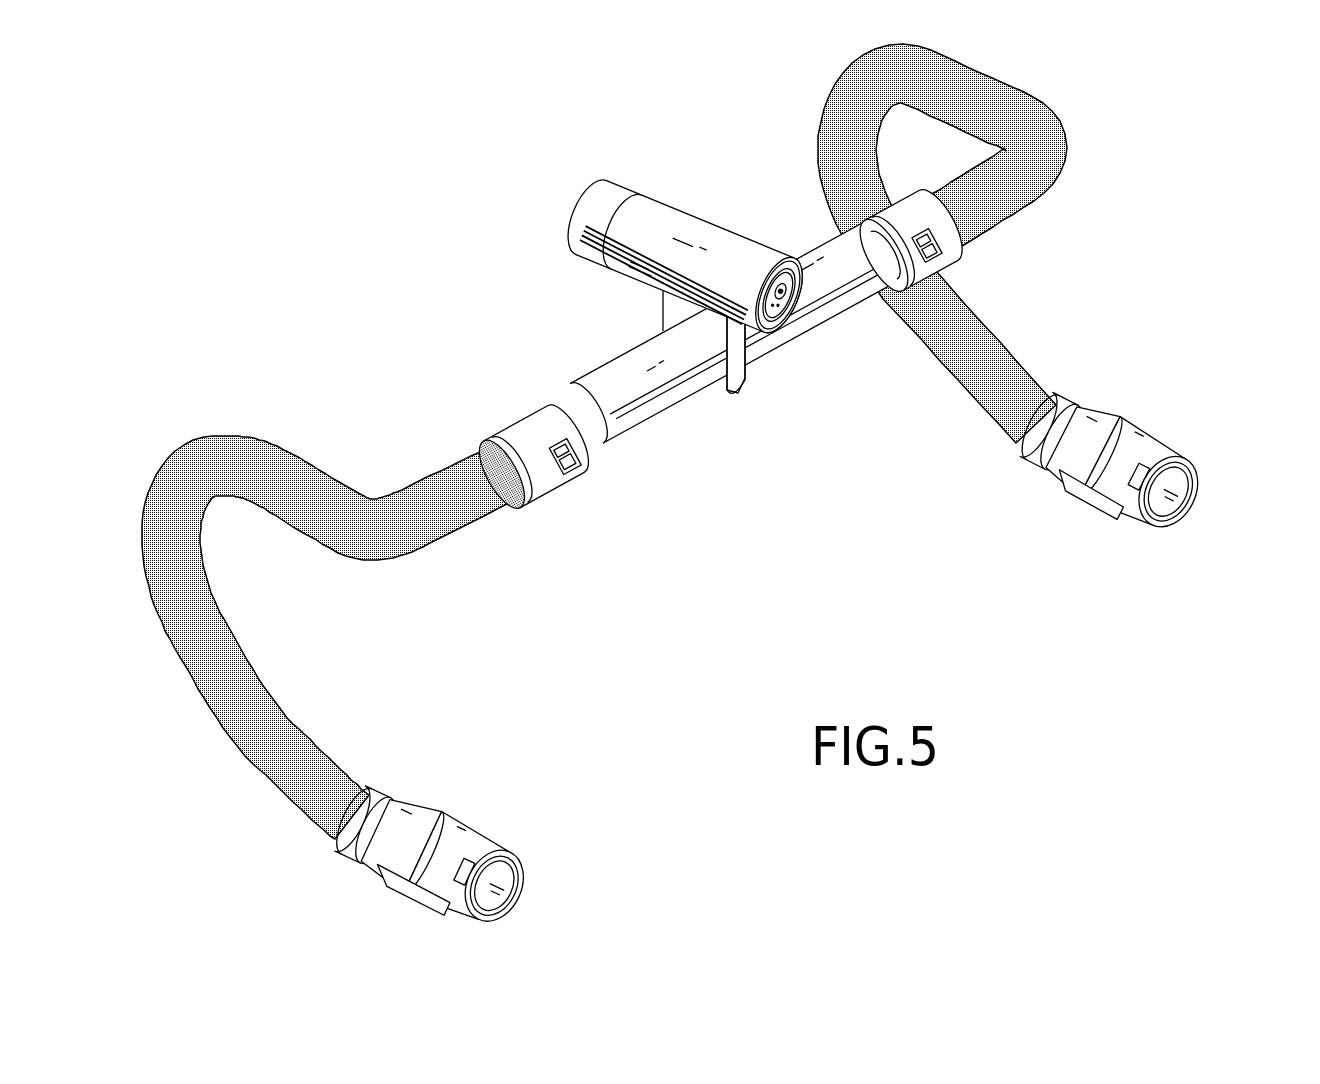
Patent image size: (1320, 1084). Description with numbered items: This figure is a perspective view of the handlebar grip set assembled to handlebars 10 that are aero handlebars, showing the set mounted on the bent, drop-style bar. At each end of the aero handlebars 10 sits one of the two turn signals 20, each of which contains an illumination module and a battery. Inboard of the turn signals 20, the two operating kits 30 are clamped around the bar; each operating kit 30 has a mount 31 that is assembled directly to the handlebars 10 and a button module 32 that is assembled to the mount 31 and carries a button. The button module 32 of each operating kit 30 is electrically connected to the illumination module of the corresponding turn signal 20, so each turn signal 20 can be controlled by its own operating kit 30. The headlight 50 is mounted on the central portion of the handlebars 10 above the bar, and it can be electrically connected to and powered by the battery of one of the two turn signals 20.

The handlebars 10 is at (643, 403).
The turn signals 20 is at (518, 922).
The operating kits 30 is at (552, 516).
The mount 31 is at (537, 423).
The button module 32 is at (573, 460).
The headlight 50 is at (623, 190).